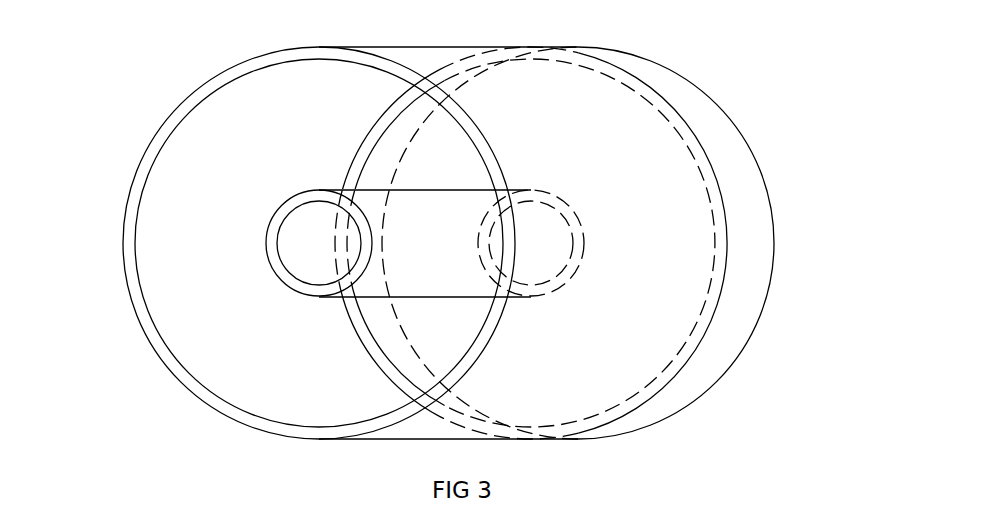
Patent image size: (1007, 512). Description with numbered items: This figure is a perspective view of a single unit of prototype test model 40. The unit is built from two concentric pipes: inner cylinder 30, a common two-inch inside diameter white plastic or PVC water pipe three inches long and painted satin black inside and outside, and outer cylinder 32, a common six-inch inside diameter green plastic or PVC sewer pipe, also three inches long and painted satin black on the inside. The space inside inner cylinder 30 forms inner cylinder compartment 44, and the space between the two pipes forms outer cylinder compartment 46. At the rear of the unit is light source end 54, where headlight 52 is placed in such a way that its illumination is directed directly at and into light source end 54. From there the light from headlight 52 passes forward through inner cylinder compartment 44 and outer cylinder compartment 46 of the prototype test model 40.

The inner cylinder 30 is at (287, 291).
The outer cylinder 32 is at (203, 84).
The prototype test model unit 40 is at (281, 251).
The inner cylinder compartment 44 is at (308, 230).
The outer cylinder compartment 46 is at (158, 183).
The headlight 52 is at (754, 334).
The light source end 54 is at (708, 155).